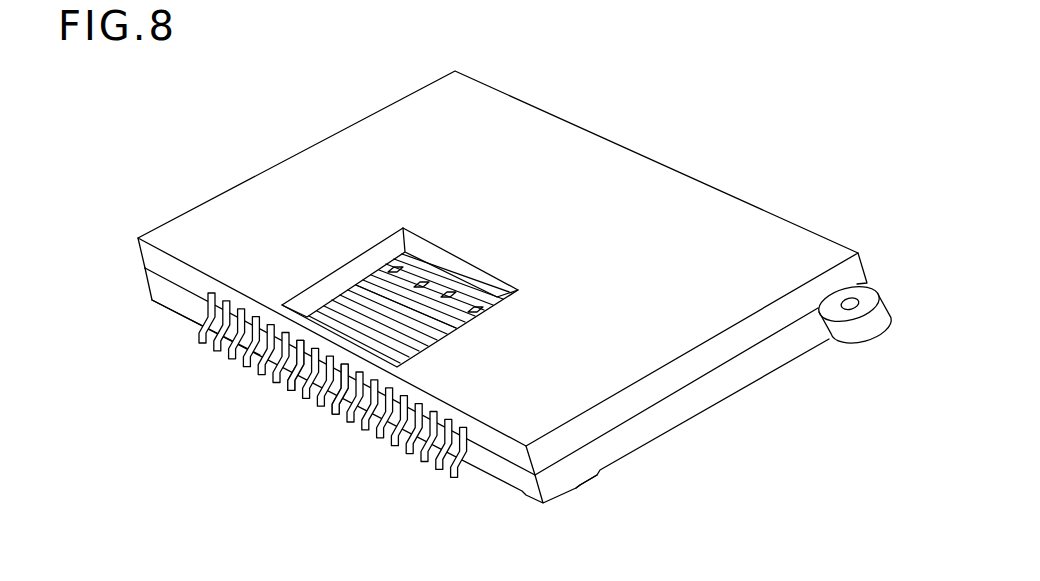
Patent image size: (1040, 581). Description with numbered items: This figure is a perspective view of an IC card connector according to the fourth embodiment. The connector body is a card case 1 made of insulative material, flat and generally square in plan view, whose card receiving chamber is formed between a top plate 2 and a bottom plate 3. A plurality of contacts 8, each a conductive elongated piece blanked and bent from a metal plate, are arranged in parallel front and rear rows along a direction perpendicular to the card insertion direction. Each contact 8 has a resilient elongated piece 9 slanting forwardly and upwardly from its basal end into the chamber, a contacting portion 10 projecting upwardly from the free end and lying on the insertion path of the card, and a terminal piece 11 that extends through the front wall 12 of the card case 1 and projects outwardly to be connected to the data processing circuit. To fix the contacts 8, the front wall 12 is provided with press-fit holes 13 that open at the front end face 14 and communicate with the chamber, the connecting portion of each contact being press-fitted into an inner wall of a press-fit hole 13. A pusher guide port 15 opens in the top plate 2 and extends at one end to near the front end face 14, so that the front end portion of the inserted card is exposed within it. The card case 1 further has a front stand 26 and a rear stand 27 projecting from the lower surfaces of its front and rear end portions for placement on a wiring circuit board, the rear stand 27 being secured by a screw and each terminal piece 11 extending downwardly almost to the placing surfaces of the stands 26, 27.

The card case 1 is at (652, 130).
The top plate 2 is at (303, 156).
The bottom plate 3 is at (693, 402).
The contact 8 is at (345, 307).
The resilient elongated piece 9 is at (364, 300).
The contacting portion 10 is at (385, 275).
The terminal piece 11 is at (257, 352).
The front wall 12 is at (333, 416).
The press-fit hole 13 is at (305, 390).
The front end face 14 is at (197, 305).
The pusher guide port 15 is at (445, 262).
The front stand 26 is at (577, 488).
The rear stand 27 is at (847, 342).